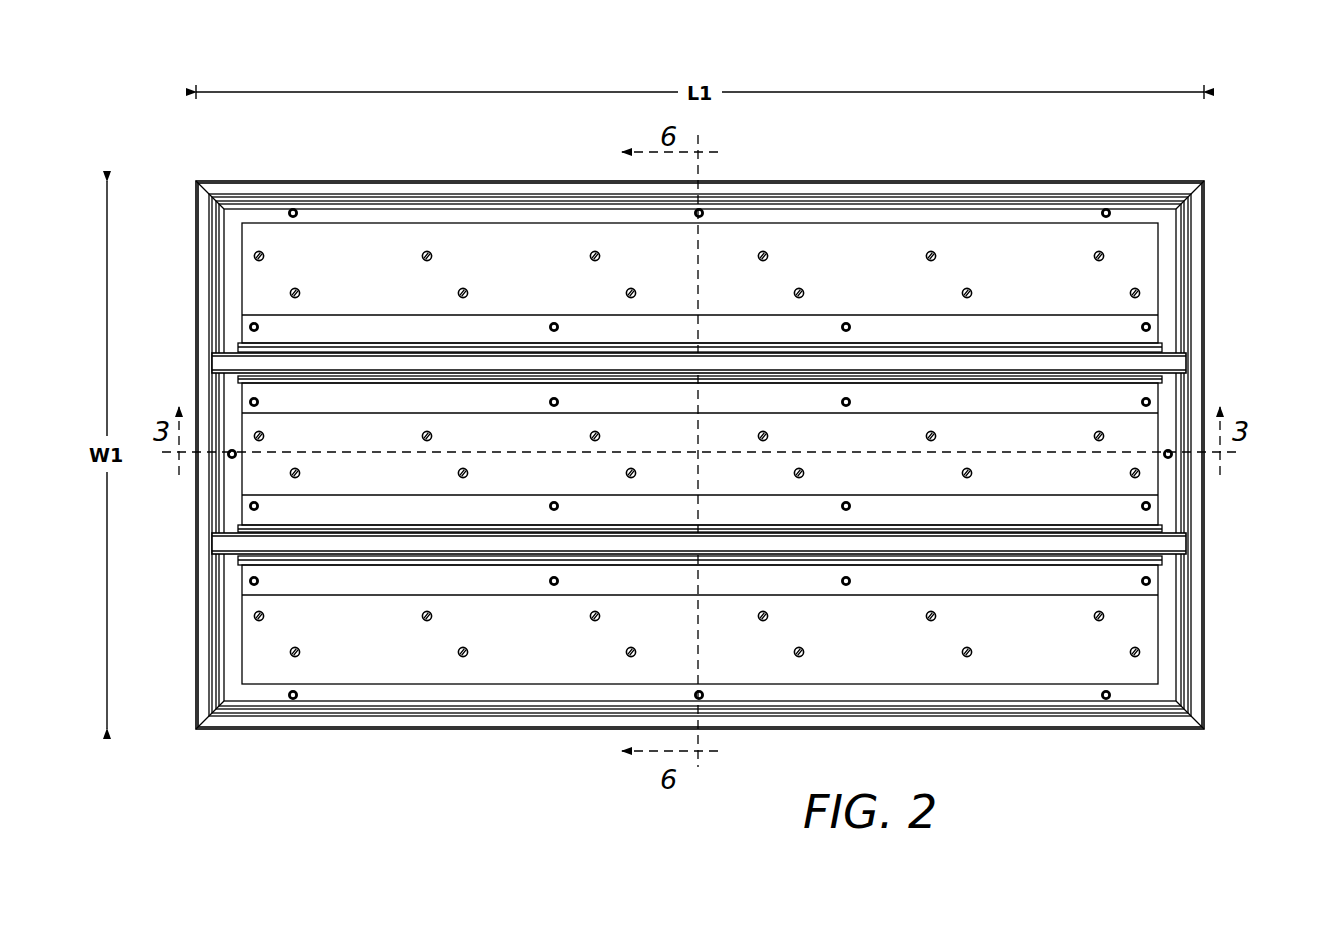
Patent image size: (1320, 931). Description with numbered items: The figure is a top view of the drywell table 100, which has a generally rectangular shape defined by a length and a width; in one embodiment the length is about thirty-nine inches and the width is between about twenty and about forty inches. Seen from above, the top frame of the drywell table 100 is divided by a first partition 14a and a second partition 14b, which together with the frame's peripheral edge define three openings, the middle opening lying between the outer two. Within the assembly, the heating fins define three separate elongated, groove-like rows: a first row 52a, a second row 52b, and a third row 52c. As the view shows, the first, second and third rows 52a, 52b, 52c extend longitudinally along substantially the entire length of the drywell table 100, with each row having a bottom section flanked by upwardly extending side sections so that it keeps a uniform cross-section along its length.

The drywell table 100 is at (1275, 130).
The first row 52a is at (1044, 282).
The second row 52b is at (1044, 483).
The third row 52c is at (1044, 658).
The first partition 14a is at (1172, 365).
The second partition 14b is at (1170, 546).